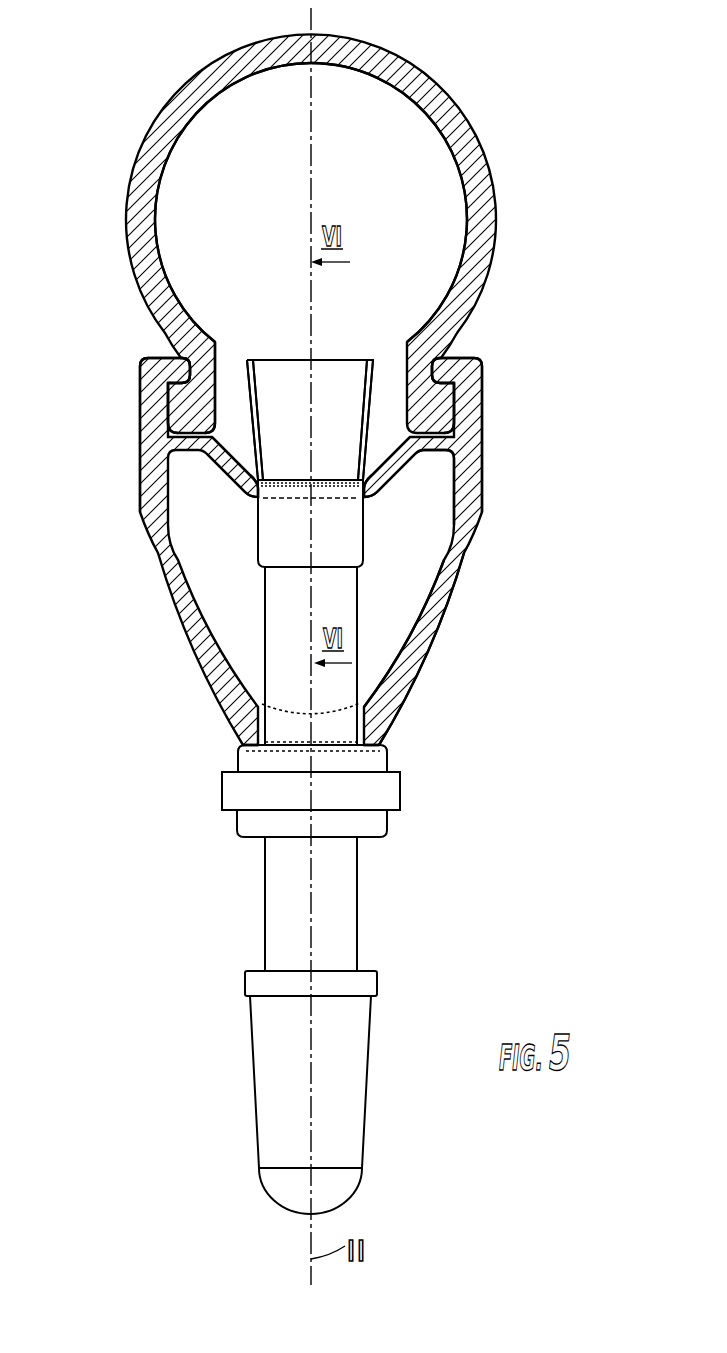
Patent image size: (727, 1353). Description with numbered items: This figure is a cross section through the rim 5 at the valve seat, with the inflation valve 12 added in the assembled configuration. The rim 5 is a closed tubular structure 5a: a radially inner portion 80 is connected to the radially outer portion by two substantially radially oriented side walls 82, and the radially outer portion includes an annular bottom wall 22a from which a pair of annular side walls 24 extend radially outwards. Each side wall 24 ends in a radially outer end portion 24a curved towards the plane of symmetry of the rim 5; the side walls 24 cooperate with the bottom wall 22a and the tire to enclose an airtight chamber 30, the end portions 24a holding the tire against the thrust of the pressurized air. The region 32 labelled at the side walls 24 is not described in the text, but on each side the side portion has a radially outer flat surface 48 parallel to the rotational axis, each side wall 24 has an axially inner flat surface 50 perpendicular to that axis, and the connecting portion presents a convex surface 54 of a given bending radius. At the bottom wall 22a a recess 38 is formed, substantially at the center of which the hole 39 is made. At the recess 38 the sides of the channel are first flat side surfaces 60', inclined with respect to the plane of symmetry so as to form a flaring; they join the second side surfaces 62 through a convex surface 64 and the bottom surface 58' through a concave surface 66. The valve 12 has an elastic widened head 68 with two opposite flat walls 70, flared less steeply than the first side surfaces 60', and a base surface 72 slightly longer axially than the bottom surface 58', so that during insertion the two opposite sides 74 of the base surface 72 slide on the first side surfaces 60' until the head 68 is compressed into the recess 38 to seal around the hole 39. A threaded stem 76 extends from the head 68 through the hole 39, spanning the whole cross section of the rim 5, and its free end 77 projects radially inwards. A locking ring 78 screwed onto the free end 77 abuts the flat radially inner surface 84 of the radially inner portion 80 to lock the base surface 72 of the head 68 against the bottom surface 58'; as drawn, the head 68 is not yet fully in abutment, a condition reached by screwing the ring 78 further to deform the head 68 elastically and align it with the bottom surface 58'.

The rim 5 is at (441, 599).
The tubular structure 5a is at (415, 590).
The inflation valve 12 is at (285, 627).
The annular bottom wall 22a is at (384, 466).
The annular side walls 24 is at (141, 370).
The radially outer end portion 24a is at (183, 363).
The airtight chamber 30 is at (349, 137).
The latching hook 32 is at (180, 398).
The recess 38 is at (383, 281).
The hole 39 is at (368, 488).
The radially outer flat surface 48 is at (192, 434).
The axially inner flat surface 50 is at (442, 404).
The convex surface 54 is at (218, 390).
The bottom surface 58' is at (310, 454).
The first flat side surfaces 60' is at (310, 402).
The second side surfaces 62 is at (235, 387).
The convex surface 64 is at (263, 393).
The concave surface 66 is at (263, 487).
The widened head 68 is at (323, 372).
The flat walls 70 is at (376, 378).
The base surface 72 is at (322, 488).
The opposite sides 74 is at (256, 489).
The threaded stem 76 is at (340, 607).
The free end 77 is at (279, 897).
The locking ring 78 is at (383, 790).
The radially inner portion 80 is at (258, 721).
The side walls 82 is at (140, 448).
The radially inner surface 84 is at (383, 752).